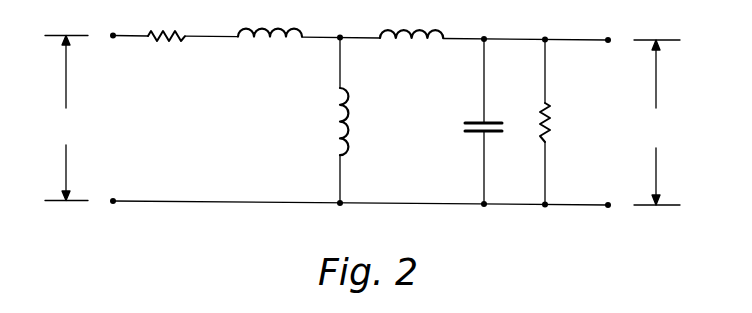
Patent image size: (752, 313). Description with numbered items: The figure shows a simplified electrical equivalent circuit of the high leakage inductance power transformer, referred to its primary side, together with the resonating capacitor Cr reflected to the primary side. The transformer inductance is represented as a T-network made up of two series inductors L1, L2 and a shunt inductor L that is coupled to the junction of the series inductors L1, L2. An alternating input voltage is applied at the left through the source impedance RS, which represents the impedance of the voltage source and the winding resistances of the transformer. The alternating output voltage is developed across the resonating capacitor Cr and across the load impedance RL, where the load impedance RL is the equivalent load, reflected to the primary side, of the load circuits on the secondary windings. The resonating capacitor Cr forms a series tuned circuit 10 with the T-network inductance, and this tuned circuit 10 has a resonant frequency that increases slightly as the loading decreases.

The tuned circuit 10 is at (362, 105).
The source impedance RS is at (166, 36).
The series inductor L1 is at (270, 37).
The series inductor L2 is at (411, 37).
The shunt inductor L is at (325, 121).
The resonating capacitor Cr is at (467, 126).
The load impedance RL is at (558, 122).